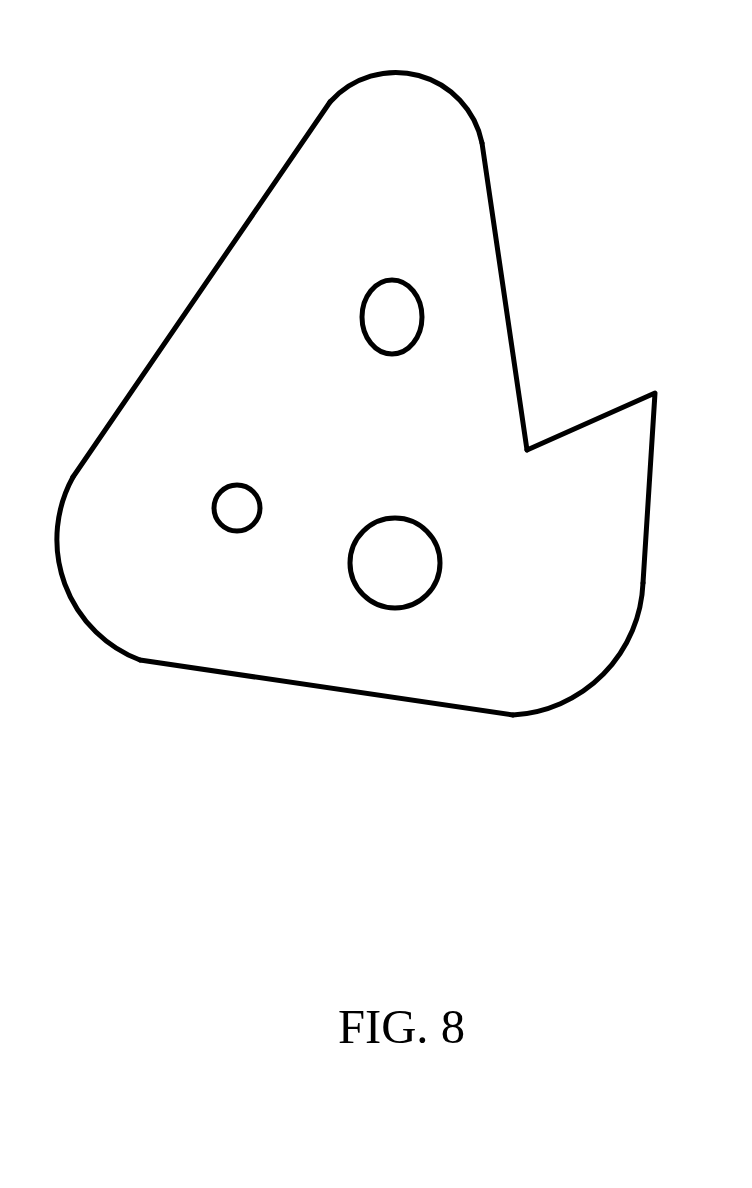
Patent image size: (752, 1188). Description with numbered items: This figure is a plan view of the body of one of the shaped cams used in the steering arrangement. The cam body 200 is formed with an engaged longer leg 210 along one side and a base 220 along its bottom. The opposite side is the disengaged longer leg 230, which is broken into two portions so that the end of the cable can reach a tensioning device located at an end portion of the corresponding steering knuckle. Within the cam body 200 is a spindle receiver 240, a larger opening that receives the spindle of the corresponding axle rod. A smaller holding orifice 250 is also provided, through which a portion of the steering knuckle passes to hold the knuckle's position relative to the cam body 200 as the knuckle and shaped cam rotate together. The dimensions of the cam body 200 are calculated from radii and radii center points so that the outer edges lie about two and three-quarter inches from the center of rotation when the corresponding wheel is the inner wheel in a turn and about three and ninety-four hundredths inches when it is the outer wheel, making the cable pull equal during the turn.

The cam body 200 is at (356, 395).
The engaged longer leg 210 is at (201, 289).
The base 220 is at (326, 714).
The disengaged longer leg 230 is at (544, 296).
The spindle receiver 240 is at (365, 585).
The holding orifice 250 is at (200, 534).